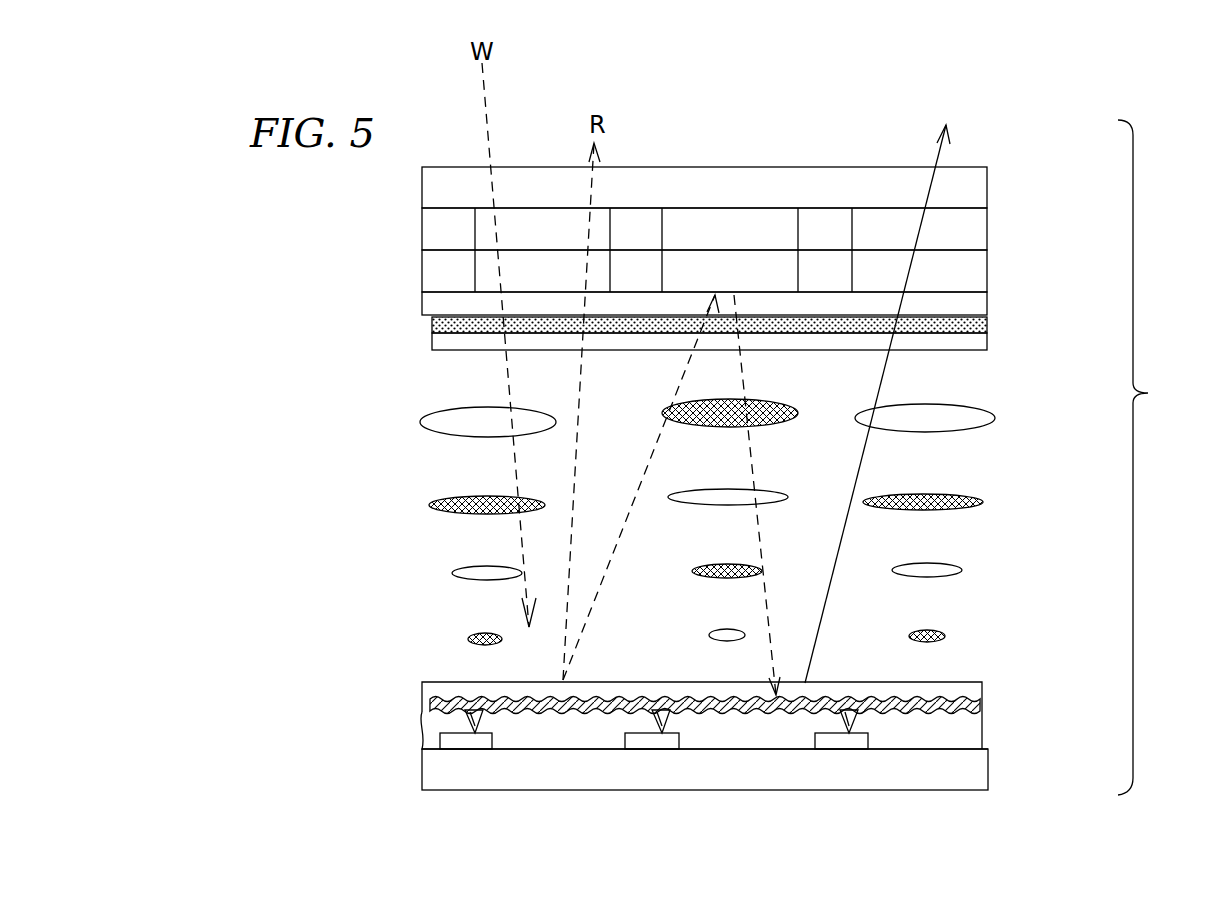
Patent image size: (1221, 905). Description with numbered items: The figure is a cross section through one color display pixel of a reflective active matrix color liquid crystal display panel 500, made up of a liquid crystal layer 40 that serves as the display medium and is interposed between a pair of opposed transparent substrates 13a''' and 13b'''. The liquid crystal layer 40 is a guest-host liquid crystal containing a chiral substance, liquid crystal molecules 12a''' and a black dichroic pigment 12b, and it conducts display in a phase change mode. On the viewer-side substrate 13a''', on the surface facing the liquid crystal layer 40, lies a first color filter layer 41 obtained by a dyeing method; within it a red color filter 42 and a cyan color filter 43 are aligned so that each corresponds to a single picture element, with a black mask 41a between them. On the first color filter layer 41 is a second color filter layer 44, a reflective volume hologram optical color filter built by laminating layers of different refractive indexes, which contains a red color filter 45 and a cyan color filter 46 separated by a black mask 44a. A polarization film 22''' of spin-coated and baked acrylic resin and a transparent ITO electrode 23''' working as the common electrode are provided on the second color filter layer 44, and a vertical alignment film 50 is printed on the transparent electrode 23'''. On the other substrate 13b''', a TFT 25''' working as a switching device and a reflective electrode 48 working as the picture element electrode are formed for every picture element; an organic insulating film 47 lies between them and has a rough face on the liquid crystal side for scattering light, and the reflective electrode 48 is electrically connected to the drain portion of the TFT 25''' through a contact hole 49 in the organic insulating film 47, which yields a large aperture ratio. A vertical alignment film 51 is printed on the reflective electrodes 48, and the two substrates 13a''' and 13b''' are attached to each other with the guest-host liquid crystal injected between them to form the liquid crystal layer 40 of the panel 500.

The transparent substrate 13a''' is at (767, 182).
The first color filter layer 41 is at (987, 220).
The second color filter layer 44 is at (987, 258).
The polarization film 22''' is at (761, 289).
The transparent electrode 23''' is at (766, 314).
The vertical alignment film 50 is at (987, 335).
The black mask 41a is at (431, 209).
The black mask 44a is at (430, 273).
The red color filter 42 is at (745, 230).
The cyan color filter 43 is at (724, 230).
The red color filter 45 is at (746, 273).
The cyan color filter 46 is at (724, 273).
The liquid crystal layer 40 is at (999, 482).
The transparent lens element 12a''' is at (976, 416).
The black dichroic pigment 12b is at (980, 502).
The vertical alignment film 51 is at (972, 690).
The reflective electrode 48 is at (982, 685).
The organic insulating film 47 is at (973, 723).
The contact hole 49 is at (844, 703).
The TFT 25''' is at (778, 745).
The transparent substrate 13b''' is at (775, 771).
The liquid crystal display panel 500 is at (1162, 457).